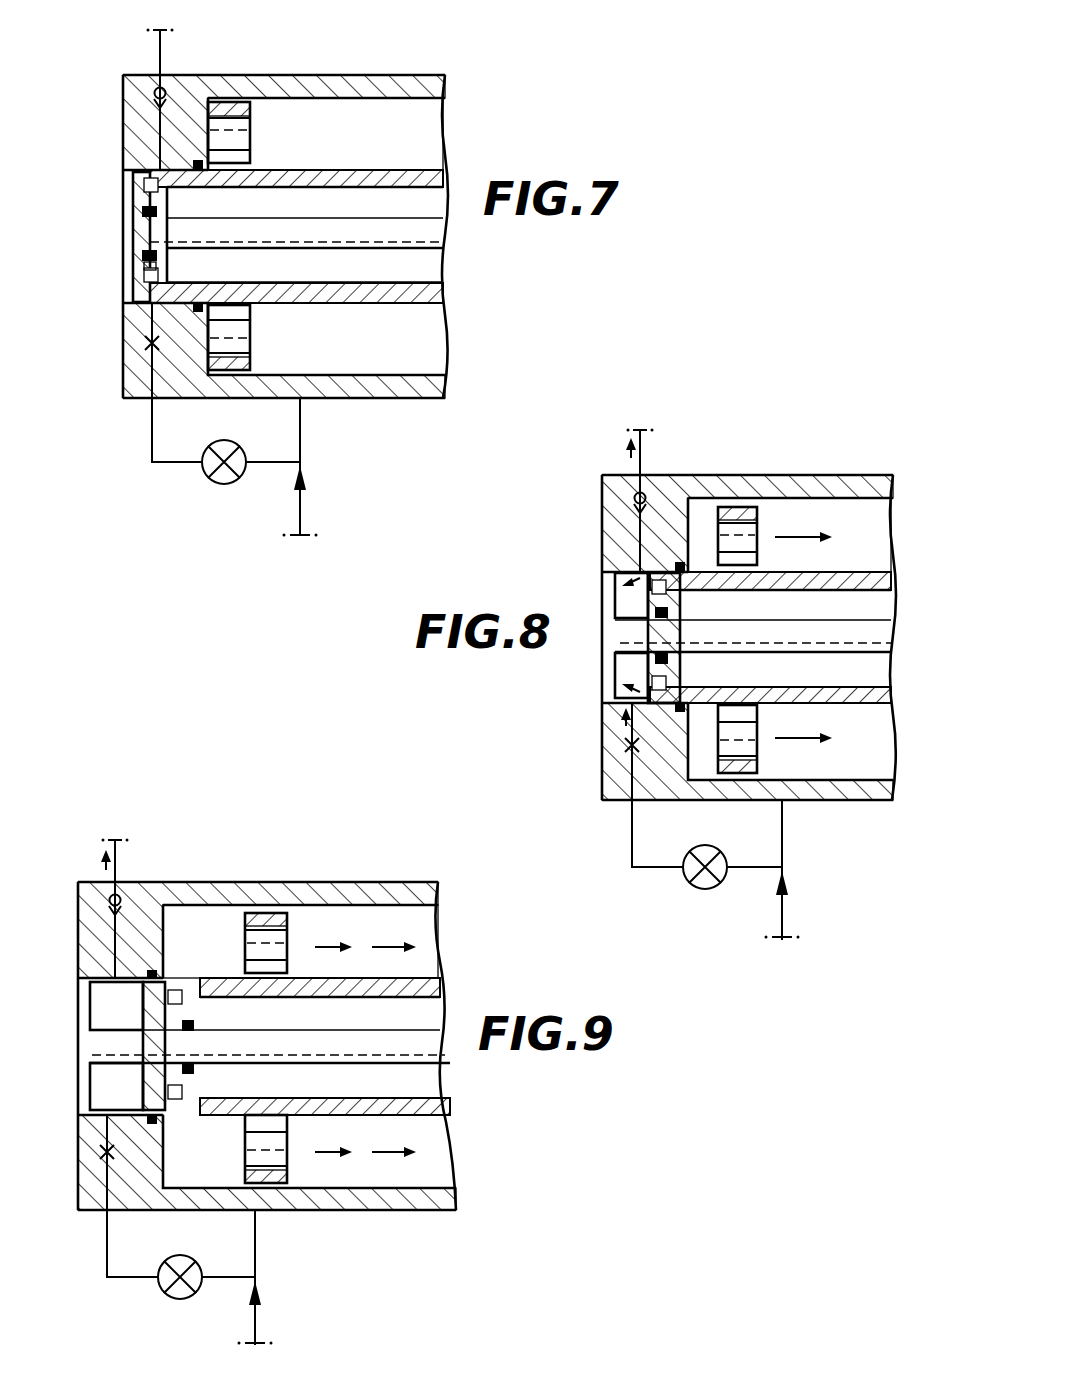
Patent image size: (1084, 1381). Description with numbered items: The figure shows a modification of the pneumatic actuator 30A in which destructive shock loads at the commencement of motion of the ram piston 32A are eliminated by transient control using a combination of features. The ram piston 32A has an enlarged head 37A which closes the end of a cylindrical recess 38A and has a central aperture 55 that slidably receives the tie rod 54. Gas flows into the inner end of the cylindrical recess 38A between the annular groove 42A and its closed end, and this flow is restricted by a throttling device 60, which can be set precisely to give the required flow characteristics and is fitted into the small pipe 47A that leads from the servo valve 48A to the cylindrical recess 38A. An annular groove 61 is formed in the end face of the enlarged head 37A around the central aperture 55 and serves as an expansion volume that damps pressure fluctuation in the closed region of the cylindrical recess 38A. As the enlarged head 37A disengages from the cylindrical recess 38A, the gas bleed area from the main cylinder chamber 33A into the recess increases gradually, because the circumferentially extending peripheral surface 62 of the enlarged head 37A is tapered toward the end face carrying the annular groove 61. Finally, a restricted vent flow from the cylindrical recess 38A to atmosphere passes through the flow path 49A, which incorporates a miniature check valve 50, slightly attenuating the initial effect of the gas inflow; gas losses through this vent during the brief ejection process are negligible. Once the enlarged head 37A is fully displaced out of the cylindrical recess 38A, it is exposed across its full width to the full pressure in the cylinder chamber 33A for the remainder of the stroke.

In FIG. 7, the pneumatic actuator 30A is at (398, 62).
In FIG. 7, the ram piston 32A is at (378, 298).
In FIG. 8, the ram piston 32A is at (851, 697).
In FIG. 9, the ram piston 32A is at (308, 990).
In FIG. 7, the main cylinder chamber 33A is at (322, 115).
In FIG. 8, the main cylinder chamber 33A is at (786, 513).
In FIG. 9, the main cylinder chamber 33A is at (188, 928).
In FIG. 7, the enlarged head 37A is at (178, 174).
In FIG. 9, the enlarged head 37A is at (234, 988).
In FIG. 7, the cylindrical recess 38A is at (137, 297).
In FIG. 8, the cylindrical recess 38A is at (623, 568).
In FIG. 9, the cylindrical recess 38A is at (97, 1110).
In FIG. 7, the annular groove 42A is at (213, 350).
In FIG. 7, the small pipe 47A is at (150, 414).
In FIG. 7, the pump 48A is at (226, 478).
In FIG. 8, the pump 48A is at (711, 884).
In FIG. 9, the pump 48A is at (182, 1296).
In FIG. 7, the flow path 49A is at (158, 62).
In FIG. 7, the miniature check valve 50 is at (152, 97).
In FIG. 7, the tie rod 54 is at (398, 233).
In FIG. 8, the tie rod 54 is at (853, 632).
In FIG. 9, the tie rod 54 is at (313, 1107).
In FIG. 7, the central aperture 55 is at (167, 217).
In FIG. 9, the central aperture 55 is at (197, 1043).
In FIG. 7, the throttling device 60 is at (146, 343).
In FIG. 8, the throttling device 60 is at (626, 745).
In FIG. 9, the throttling device 60 is at (114, 1152).
In FIG. 7, the annular groove 61 is at (143, 277).
In FIG. 7, the peripheral surface 62 is at (137, 162).
In FIG. 9, the peripheral surface 62 is at (168, 982).